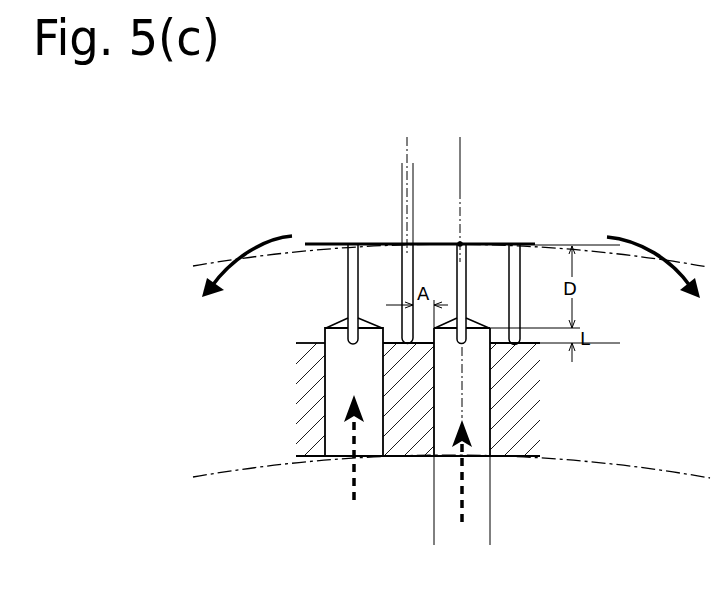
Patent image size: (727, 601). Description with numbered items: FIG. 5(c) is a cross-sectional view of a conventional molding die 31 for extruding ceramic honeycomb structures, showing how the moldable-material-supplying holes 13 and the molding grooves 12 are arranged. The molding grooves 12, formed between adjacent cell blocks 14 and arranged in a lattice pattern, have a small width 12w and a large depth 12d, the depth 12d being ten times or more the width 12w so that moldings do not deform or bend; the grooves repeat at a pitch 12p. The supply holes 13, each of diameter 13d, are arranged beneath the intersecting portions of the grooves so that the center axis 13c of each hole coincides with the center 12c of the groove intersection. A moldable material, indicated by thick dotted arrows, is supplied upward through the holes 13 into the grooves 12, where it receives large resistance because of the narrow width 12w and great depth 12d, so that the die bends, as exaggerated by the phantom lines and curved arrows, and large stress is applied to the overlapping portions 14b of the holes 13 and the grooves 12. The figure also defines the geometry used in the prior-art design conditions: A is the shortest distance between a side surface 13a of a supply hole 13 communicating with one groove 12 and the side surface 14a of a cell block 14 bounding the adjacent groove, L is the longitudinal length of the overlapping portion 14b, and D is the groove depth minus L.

The molding groove 12 is at (467, 273).
The center of intersection of molding grooves 12c is at (461, 243).
The depth of molding groove 12d is at (612, 246).
The tooth pitch 12p is at (460, 141).
The width of molding groove 12w is at (437, 170).
The moldable-material-supplying hole 13 is at (477, 430).
The side surface of moldable-material-supplying hole 13a is at (465, 347).
The center axis of moldable-material-supplying hole 13c is at (463, 400).
The diameter of moldable-material-supplying hole 13d is at (490, 538).
The cell block 14 is at (433, 252).
The side surface of cell block 14a is at (407, 330).
The overlapping portion 14b is at (390, 338).
The molding die 31 is at (277, 196).